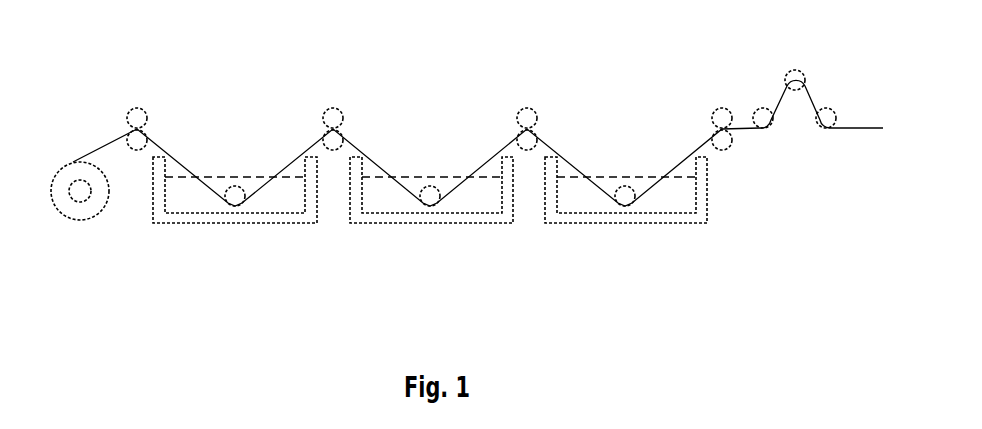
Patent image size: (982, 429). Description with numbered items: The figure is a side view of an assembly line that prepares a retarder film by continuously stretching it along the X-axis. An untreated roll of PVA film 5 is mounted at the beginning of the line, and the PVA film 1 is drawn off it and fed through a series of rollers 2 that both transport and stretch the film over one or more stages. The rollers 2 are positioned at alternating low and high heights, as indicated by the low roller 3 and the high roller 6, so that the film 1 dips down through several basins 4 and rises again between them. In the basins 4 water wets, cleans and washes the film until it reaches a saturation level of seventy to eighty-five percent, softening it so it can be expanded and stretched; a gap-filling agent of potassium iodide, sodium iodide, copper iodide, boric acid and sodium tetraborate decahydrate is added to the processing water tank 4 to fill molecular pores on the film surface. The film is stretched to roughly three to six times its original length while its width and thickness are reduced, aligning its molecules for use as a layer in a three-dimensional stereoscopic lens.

The PVA film 1 is at (97, 148).
The rollers 2 is at (140, 107).
The low roller 3 is at (235, 186).
The basin 4 is at (287, 223).
The untreated roll of PVA film 5 is at (77, 221).
The high roller 6 is at (757, 107).